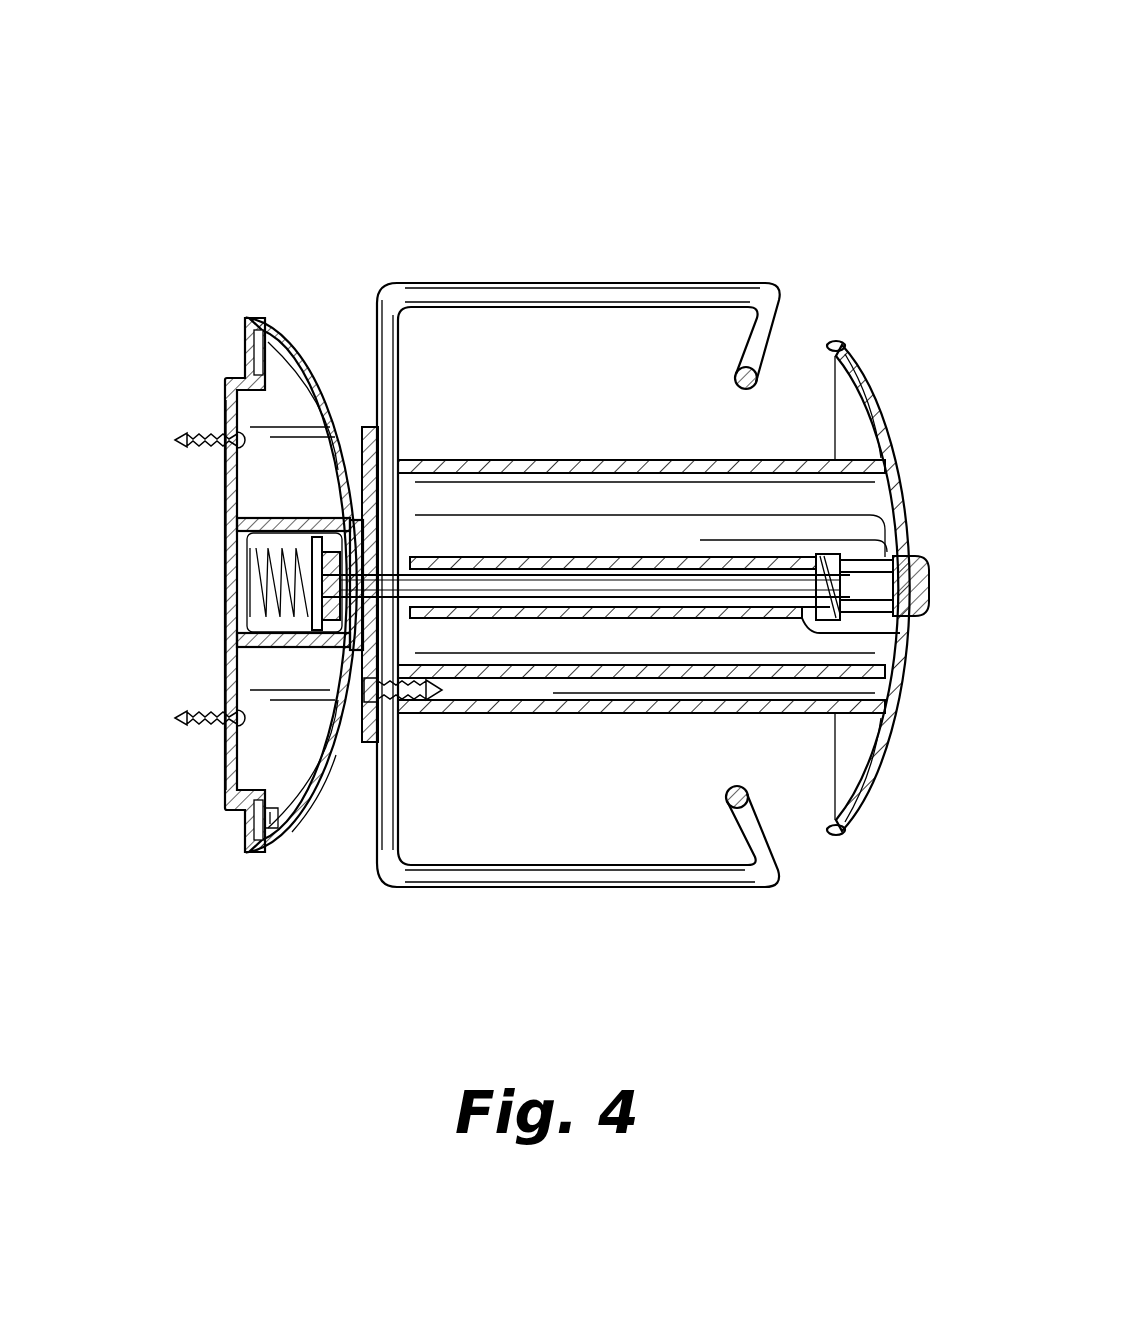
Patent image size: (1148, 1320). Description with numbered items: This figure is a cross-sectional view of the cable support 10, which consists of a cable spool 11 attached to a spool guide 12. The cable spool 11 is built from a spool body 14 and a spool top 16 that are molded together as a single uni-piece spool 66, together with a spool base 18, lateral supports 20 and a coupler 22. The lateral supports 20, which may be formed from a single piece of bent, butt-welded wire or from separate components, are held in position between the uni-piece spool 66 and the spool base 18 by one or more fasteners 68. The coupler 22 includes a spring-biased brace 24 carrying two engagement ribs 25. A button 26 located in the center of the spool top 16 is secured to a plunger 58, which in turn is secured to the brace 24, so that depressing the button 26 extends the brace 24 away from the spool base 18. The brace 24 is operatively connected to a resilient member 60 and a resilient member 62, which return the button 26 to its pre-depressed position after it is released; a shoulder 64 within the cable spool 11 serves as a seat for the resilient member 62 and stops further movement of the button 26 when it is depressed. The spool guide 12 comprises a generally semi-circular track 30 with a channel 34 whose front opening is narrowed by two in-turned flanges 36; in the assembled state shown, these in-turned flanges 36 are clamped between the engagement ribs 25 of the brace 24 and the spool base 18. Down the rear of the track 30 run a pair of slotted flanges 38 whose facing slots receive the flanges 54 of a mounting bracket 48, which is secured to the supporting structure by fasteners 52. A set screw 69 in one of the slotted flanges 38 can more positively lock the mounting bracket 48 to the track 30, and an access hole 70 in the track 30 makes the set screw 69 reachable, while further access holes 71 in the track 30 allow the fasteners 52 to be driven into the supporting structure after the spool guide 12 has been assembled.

The cable support 10 is at (735, 106).
The cable spool 11 is at (554, 233).
The spool guide 12 is at (321, 243).
The spool body 14 is at (474, 456).
The spool top 16 is at (870, 362).
The spool base 18 is at (370, 422).
The lateral supports 20 is at (625, 290).
The coupler 22 is at (458, 586).
The brace 24 is at (302, 620).
The engagement ribs 25 is at (322, 538).
The button 26 is at (920, 556).
The track 30 is at (290, 318).
The channel 34 is at (265, 517).
The in-turned flanges 36 is at (340, 498).
The slotted flanges 38 is at (244, 356).
The mounting bracket 48 is at (210, 754).
The fasteners 52 is at (183, 433).
The flanges 54 is at (252, 345).
The plunger 58 is at (614, 590).
The resilient member 60 is at (230, 548).
The resilient member 62 is at (834, 556).
The shoulder 64 is at (790, 552).
The uni-piece spool 66 is at (592, 460).
The fasteners 68 is at (432, 702).
The set screw 69 is at (278, 812).
The access hole 70 is at (305, 822).
The access holes 71 is at (332, 432).